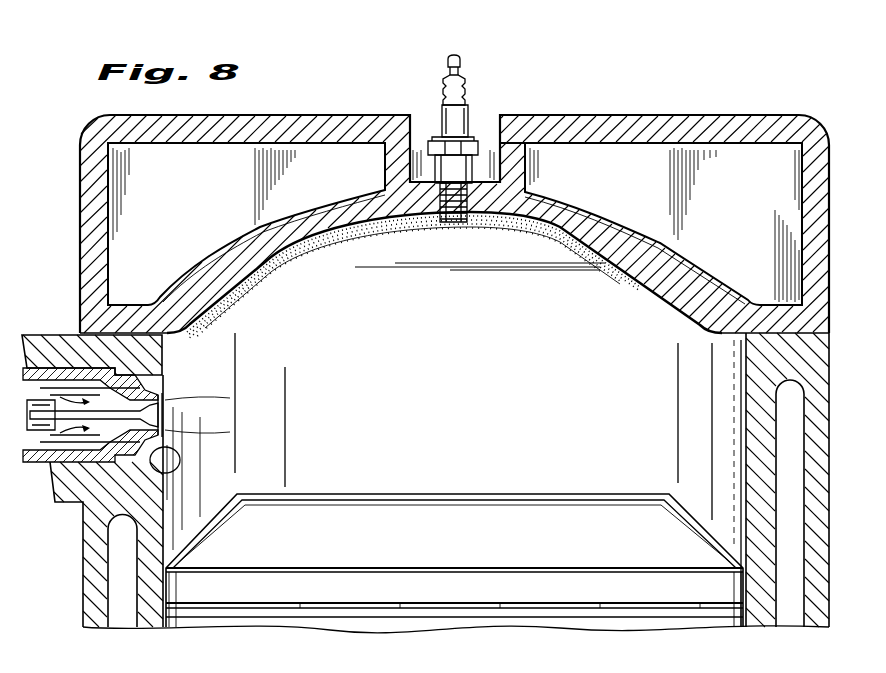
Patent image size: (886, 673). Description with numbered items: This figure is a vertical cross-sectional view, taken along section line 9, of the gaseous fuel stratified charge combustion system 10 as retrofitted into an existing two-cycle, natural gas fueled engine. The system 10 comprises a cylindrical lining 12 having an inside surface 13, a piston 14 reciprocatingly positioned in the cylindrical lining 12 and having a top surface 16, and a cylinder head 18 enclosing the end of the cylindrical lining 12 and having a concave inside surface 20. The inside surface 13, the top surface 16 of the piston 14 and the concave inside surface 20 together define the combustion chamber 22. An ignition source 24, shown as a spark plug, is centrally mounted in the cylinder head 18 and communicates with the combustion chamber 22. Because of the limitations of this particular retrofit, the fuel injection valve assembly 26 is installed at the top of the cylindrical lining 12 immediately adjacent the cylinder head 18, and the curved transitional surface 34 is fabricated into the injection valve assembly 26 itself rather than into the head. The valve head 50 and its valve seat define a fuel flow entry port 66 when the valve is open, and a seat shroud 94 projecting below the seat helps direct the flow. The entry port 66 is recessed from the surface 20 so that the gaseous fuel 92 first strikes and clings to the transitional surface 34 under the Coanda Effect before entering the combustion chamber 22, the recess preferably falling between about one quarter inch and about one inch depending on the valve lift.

The section line 9- 9 is at (420, 20).
The gaseous fuel stratified charge combustion system 10 is at (569, 99).
The cylindrical lining 12 is at (95, 553).
The inside surface 13 is at (167, 497).
The piston 14 is at (457, 536).
The top surface 16 is at (547, 494).
The cylinder head 18 is at (678, 118).
The concave inside surface 20 is at (550, 225).
The combustion chamber 22 is at (530, 409).
The ignition source 24 is at (503, 205).
The fuel injection valve assembly 26 is at (54, 322).
The transitional surface 34 is at (162, 388).
The valve head 50 is at (160, 415).
The fuel flow entry port 66 is at (167, 393).
The gaseous fuel 92 is at (357, 245).
The seat shroud 94 is at (160, 472).